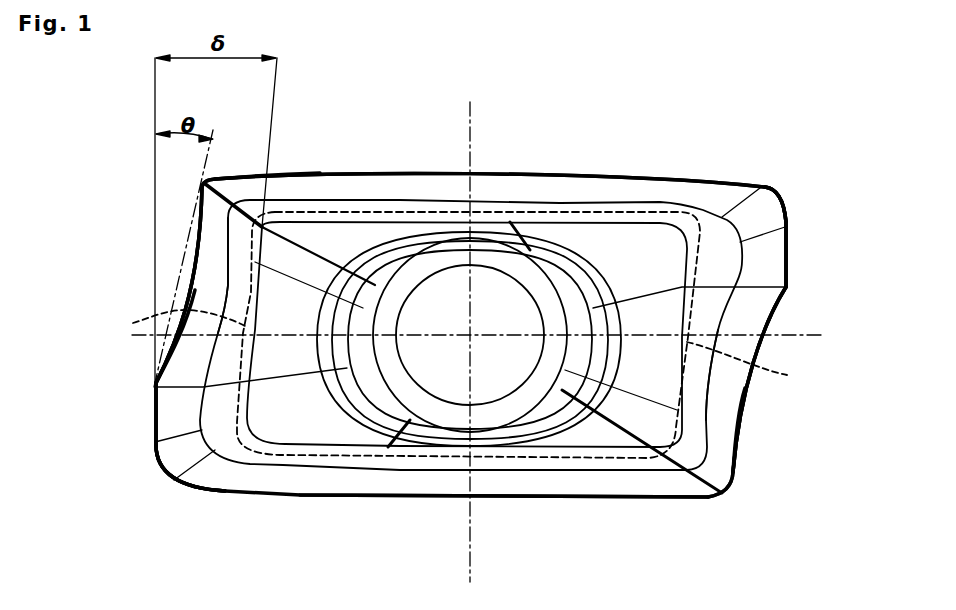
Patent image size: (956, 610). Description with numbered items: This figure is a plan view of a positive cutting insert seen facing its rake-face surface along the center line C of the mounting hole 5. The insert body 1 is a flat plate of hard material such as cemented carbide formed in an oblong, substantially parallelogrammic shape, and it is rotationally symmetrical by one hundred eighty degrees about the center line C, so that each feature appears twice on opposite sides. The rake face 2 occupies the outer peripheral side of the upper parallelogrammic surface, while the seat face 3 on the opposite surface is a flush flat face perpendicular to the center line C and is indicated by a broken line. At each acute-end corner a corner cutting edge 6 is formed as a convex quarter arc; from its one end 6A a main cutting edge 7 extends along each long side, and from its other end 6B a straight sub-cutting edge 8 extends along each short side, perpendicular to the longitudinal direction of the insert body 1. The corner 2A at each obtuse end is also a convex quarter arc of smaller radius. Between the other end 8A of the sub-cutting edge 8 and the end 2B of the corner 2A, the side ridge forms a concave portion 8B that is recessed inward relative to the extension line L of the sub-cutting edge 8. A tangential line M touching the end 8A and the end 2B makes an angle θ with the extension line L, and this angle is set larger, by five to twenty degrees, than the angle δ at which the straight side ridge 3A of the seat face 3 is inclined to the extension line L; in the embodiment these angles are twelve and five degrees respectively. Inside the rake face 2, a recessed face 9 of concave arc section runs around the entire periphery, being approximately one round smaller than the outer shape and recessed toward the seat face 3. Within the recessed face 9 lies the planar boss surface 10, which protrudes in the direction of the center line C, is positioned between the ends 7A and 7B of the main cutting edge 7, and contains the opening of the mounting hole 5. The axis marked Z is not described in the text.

The insert body 1 is at (366, 158).
The rake face 2 is at (566, 187).
The corner 2A is at (203, 185).
The end of the corner 2B is at (201, 193).
The seat face 3 is at (640, 458).
The side ridge 3A is at (459, 349).
The mounting hole 5 is at (415, 297).
The corner cutting edge 6 is at (778, 200).
The one end of the corner cutting edge 6A is at (762, 188).
The other end of the corner cutting edge 6B is at (788, 228).
The main cutting edge 7 is at (527, 174).
The end of the main cutting edge 7A is at (488, 340).
The end of the main cutting edge 7B is at (213, 177).
The sub-cutting edge 8 is at (786, 264).
The other end of the sub-cutting edge 8A is at (788, 290).
The concave portion 8B is at (745, 390).
The recessed face 9 is at (611, 206).
The boss surface 10 is at (372, 387).
The center line C is at (472, 335).
The reference axis Z is at (433, 102).
The extension line L is at (155, 245).
The tangential line M is at (212, 138).